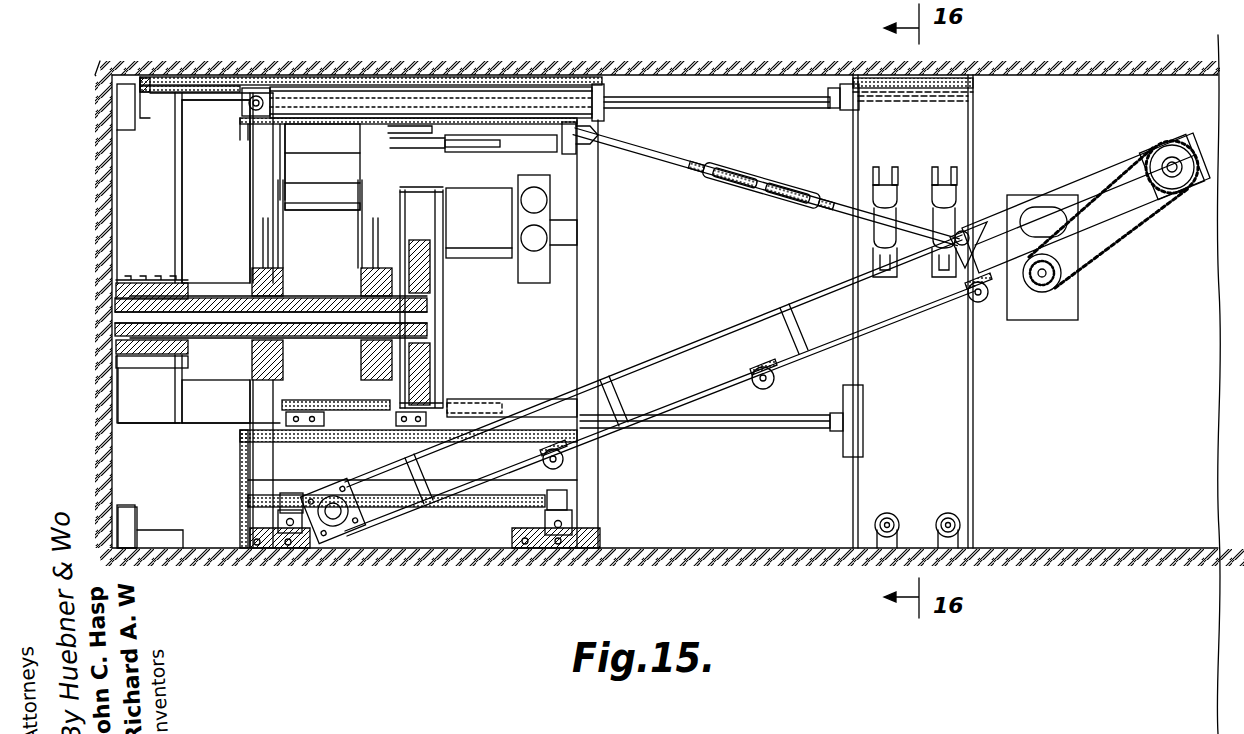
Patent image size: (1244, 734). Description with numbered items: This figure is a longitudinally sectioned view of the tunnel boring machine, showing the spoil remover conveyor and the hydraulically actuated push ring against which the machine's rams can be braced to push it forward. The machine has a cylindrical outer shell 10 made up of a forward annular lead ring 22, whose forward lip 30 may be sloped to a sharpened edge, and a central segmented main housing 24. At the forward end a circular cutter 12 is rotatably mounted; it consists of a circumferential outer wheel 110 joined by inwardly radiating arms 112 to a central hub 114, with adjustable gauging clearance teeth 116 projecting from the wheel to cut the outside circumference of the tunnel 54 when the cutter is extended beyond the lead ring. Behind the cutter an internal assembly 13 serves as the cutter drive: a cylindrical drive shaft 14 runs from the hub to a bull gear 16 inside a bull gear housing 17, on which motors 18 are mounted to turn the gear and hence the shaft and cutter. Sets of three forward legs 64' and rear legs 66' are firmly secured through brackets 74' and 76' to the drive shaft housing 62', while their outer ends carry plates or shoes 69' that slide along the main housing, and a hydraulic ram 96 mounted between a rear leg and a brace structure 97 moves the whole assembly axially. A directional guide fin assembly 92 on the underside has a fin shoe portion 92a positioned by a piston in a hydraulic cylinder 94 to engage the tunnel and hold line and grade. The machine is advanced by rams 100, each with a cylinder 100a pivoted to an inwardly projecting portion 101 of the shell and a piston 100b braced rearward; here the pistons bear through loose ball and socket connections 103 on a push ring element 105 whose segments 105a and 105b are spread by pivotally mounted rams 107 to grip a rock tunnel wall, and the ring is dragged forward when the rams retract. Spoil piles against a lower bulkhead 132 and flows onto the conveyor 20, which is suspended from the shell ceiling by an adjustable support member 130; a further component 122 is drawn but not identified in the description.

The cylindrical outer shell 10 is at (475, 78).
The circular cutter 12 is at (135, 237).
The internal assembly 13 is at (332, 345).
The cylindrical drive shaft 14 is at (200, 332).
The bull gear 16 is at (418, 277).
The bull gear housing 17 is at (445, 328).
The motors 18 is at (538, 278).
The conveyor 20 is at (708, 326).
The forward annular lead ring 22 is at (197, 82).
The central segmented main housing 24 is at (533, 80).
The forward lip 30 is at (148, 80).
The tunnel 54 is at (652, 75).
The drive shaft housing 62' is at (320, 235).
The forward legs 64' is at (218, 261).
The rear legs 66' is at (336, 294).
The plates or shoes 69' is at (374, 294).
The brackets 74' is at (242, 299).
The brackets 76' is at (360, 299).
The directional guide fin assembly 92 is at (262, 528).
The fin shoe portion 92a is at (262, 548).
The hydraulic cylinder 94 is at (287, 497).
The hydraulic ram 96 is at (518, 143).
The brace structure 97 is at (578, 152).
The rams 100 is at (420, 98).
The cylinder 100a is at (293, 97).
The piston 100b is at (800, 104).
The inwardly projecting portion 101 is at (252, 90).
The loose ball and socket connections 103 is at (846, 101).
The push ring element 105 is at (977, 128).
The push ring segment 105a is at (956, 76).
The push ring segment 105b is at (972, 477).
The pivotally mounted rams 107 is at (880, 233).
The circumferential outer wheel 110 is at (150, 530).
The inwardly radiating arms 112 is at (125, 405).
The central hub 114 is at (140, 282).
The adjustable gauging clearance teeth 116 is at (120, 113).
The motor 122 is at (425, 210).
The adjustable support member 130 is at (758, 185).
The lower bulkhead 132 is at (240, 457).